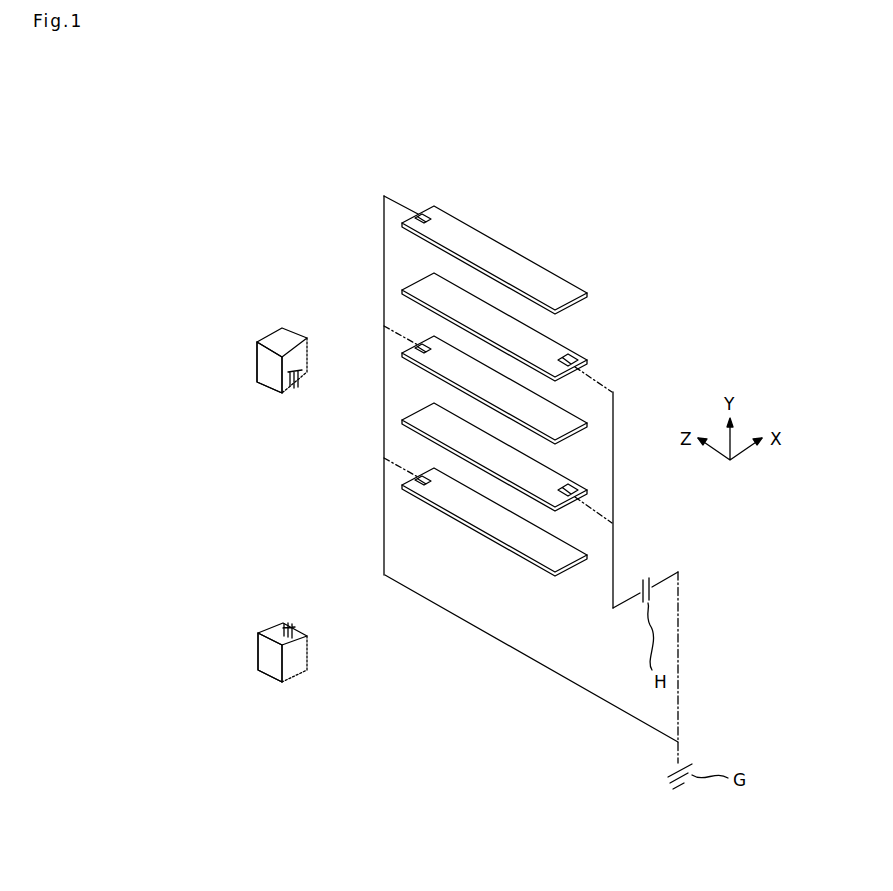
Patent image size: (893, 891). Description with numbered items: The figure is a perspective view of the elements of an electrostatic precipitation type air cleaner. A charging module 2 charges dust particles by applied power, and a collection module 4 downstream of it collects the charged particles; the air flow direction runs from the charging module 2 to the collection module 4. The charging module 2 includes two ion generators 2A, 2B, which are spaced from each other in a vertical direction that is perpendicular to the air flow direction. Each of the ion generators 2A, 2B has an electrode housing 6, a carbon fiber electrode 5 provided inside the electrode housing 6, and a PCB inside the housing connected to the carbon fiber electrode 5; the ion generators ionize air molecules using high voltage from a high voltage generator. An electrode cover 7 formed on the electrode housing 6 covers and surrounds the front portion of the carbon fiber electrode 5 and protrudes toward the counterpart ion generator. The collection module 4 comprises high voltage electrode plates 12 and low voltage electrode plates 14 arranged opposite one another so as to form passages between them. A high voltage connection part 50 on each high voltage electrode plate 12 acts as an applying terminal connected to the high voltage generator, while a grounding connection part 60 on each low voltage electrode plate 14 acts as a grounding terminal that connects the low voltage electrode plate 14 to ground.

The charging module 2 is at (212, 305).
The ion generator 2A is at (255, 347).
The ion generator 2B is at (280, 680).
The collection module 4 is at (583, 235).
The carbon fiber electrode 5 is at (290, 388).
The electrode housing 6 is at (270, 364).
The electrode cover 7 is at (614, 525).
The high voltage electrode plate 12 is at (592, 351).
The low voltage electrode plate 14 is at (588, 290).
The high voltage connection part 50 is at (566, 362).
The grounding connection part 60 is at (422, 214).